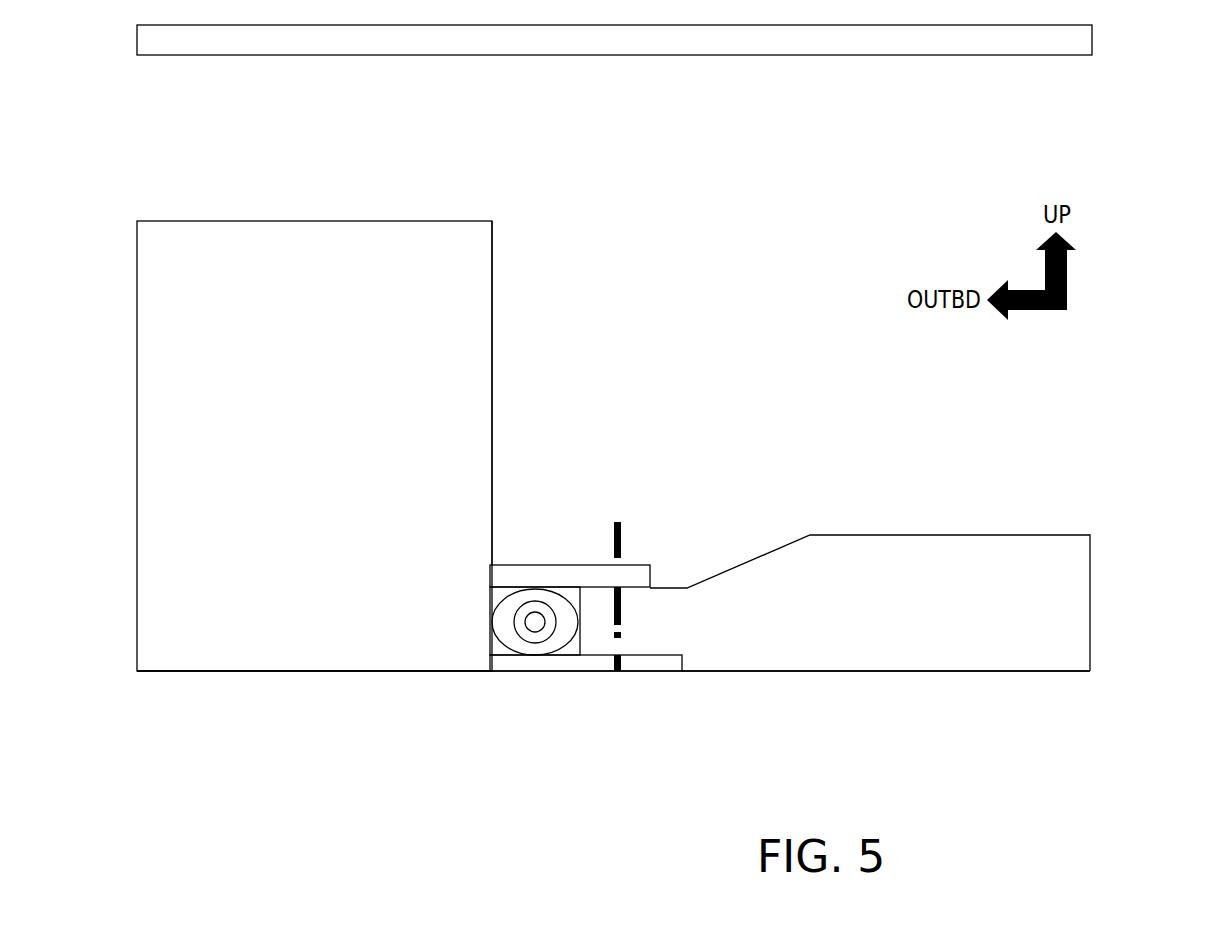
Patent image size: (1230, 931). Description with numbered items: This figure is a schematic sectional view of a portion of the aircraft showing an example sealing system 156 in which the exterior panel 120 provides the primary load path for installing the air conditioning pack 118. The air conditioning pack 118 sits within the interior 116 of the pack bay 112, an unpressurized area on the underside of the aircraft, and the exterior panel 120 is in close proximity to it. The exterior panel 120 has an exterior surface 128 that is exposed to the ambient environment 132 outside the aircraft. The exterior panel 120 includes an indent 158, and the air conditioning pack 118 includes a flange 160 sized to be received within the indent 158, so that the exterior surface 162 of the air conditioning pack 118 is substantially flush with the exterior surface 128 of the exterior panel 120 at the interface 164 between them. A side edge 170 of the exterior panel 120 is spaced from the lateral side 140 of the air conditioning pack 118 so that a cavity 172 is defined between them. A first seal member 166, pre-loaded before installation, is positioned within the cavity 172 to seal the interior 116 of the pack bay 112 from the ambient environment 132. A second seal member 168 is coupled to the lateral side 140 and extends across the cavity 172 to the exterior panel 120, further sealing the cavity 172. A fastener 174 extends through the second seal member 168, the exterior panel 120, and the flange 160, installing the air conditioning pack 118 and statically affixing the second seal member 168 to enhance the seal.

The pack bay 112 is at (1106, 96).
The interior 116 is at (797, 154).
The air conditioning pack 118 is at (137, 473).
The exterior panel 120 is at (1092, 603).
The exterior surface 128 is at (893, 672).
The ambient environment 132 is at (610, 838).
The lateral side 140 is at (492, 296).
The sealing system 156 is at (560, 583).
The indent 158 is at (677, 660).
The flange 160 is at (633, 660).
The exterior surface 162 is at (314, 672).
The interface 164 is at (491, 670).
The first seal member 166 is at (497, 625).
The second seal member 168 is at (650, 565).
The side edge 170 is at (570, 645).
The cavity 172 is at (497, 588).
The fastener 174 is at (620, 522).